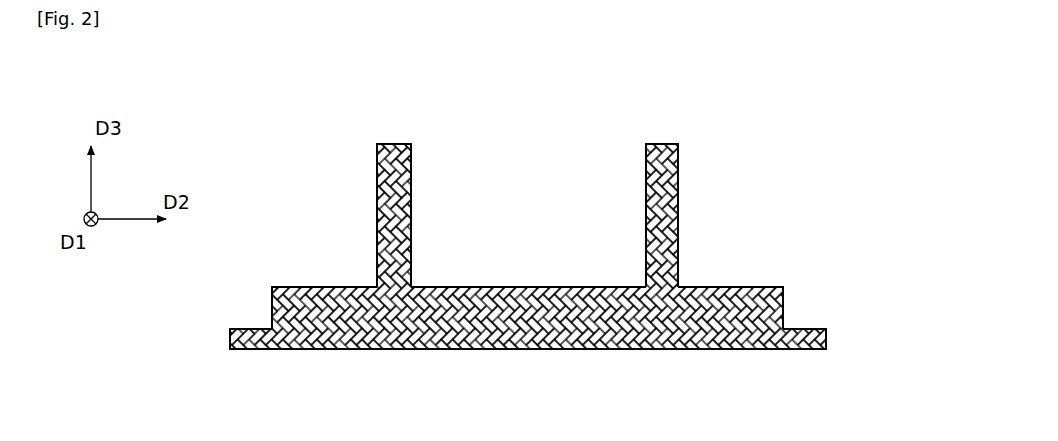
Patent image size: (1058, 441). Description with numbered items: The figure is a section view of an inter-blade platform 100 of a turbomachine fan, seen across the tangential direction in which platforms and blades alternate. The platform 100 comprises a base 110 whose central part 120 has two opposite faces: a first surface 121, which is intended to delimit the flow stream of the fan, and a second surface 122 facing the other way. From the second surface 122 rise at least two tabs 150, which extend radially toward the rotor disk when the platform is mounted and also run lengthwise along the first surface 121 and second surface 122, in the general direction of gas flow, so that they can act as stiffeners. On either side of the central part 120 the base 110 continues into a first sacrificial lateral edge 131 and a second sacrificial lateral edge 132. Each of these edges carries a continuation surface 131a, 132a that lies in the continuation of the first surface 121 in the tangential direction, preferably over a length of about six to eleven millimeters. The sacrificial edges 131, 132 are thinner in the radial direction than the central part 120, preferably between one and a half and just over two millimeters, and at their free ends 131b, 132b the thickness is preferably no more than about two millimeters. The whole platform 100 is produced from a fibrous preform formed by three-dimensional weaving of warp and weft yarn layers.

The inter-blade platform 100 is at (820, 140).
The base 110 is at (311, 300).
The central part 120 is at (468, 325).
The first surface 121 is at (525, 350).
The second surface 122 is at (524, 287).
The first sacrificial lateral edge 131 is at (240, 340).
The continuation surface 131a is at (248, 350).
The free end 131b is at (230, 331).
The second sacrificial lateral edge 132 is at (816, 340).
The continuation surface 132a is at (808, 350).
The free end 132b is at (826, 332).
The tabs 150 is at (385, 157).